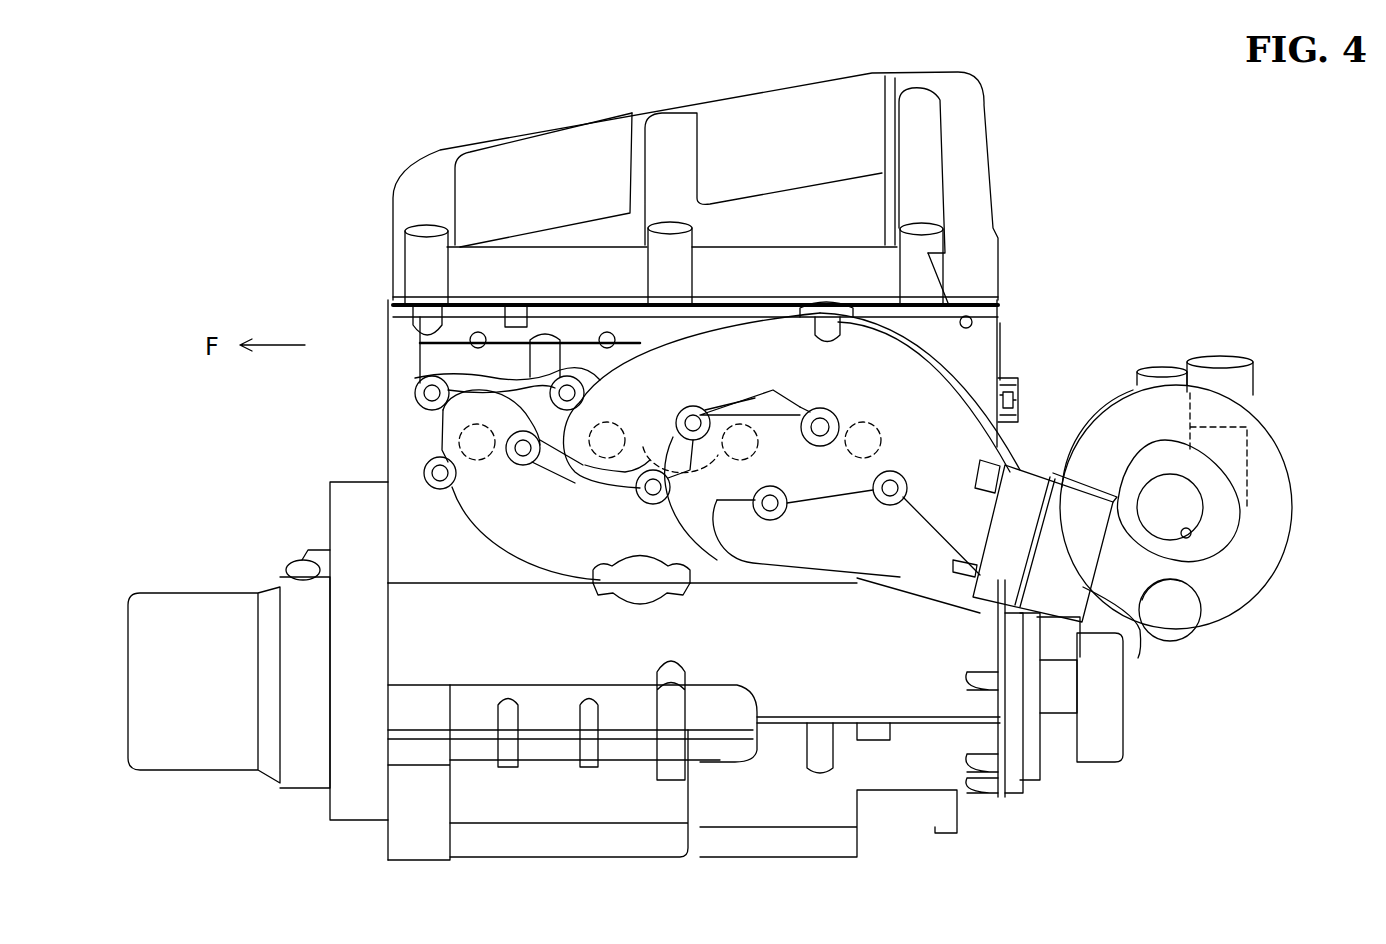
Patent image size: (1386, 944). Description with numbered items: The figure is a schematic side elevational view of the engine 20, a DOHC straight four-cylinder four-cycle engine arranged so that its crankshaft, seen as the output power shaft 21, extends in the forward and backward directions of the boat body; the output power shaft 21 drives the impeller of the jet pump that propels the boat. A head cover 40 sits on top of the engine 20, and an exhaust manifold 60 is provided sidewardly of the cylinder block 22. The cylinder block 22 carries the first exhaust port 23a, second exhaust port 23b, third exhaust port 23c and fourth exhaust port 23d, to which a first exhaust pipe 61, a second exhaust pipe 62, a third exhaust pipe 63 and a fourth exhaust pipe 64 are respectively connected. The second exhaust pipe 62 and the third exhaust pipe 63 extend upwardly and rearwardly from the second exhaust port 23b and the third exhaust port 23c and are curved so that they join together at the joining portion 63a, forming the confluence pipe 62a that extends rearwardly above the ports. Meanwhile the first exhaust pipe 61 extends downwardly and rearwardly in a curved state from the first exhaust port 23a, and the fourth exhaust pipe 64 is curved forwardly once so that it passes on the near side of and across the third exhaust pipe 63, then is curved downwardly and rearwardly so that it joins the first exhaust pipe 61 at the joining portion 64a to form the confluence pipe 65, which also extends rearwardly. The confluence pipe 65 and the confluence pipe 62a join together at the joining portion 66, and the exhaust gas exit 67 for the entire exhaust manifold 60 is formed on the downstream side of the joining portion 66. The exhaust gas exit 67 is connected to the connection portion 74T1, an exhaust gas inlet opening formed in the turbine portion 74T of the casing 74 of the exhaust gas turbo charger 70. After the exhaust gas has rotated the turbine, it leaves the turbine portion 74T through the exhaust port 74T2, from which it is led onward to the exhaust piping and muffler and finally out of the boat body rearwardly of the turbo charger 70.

The engine 20 is at (1022, 170).
The output power shaft 21 is at (1052, 703).
The cylinder block 22 is at (1019, 343).
The first exhaust port 23a is at (493, 450).
The second exhaust port 23b is at (621, 432).
The third exhaust port 23c is at (702, 476).
The fourth exhaust port 23d is at (885, 448).
The head cover 40 is at (918, 62).
The exhaust manifold 60 is at (980, 390).
The first exhaust pipe 61 is at (497, 508).
The second exhaust pipe 62 is at (707, 358).
The confluence pipe 62a is at (882, 388).
The third exhaust pipe 63 is at (770, 403).
The joining portion 63a is at (800, 405).
The fourth exhaust pipe 64 is at (683, 507).
The joining portion 64a is at (707, 552).
The confluence pipe 65 is at (850, 538).
The joining portion 66 is at (927, 513).
The exhaust gas exit 67 is at (1010, 541).
The exhaust gas turbo charger 70 is at (1272, 419).
The casing 74 is at (1298, 460).
The turbine portion 74T is at (1230, 610).
The connection portion 74T1 is at (1138, 655).
The exhaust port 74T2 is at (1190, 537).